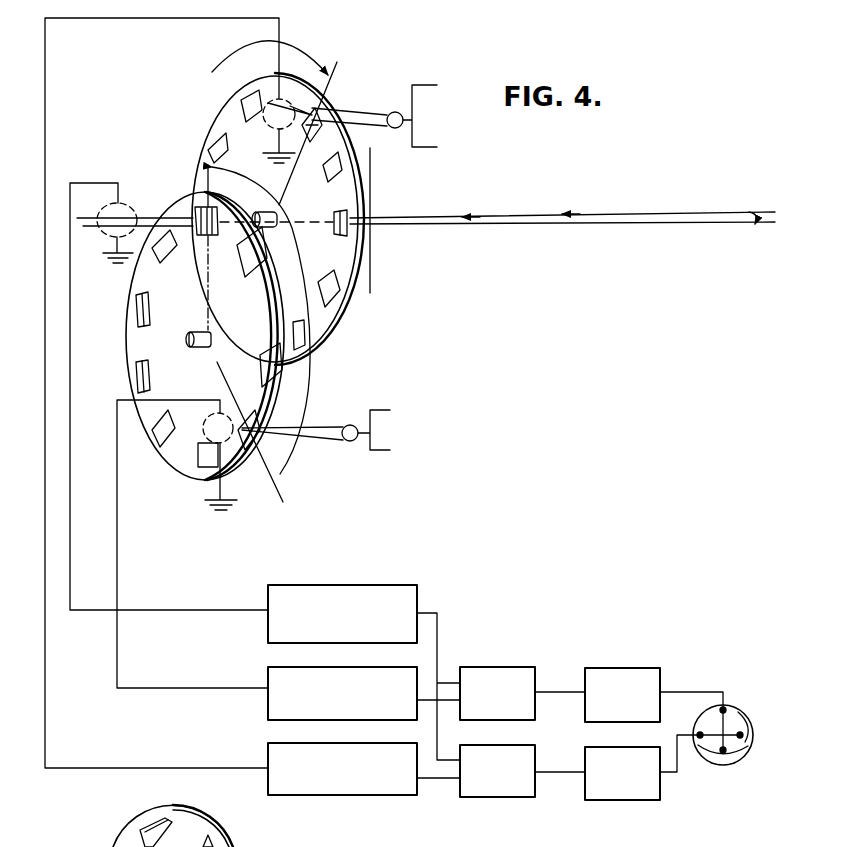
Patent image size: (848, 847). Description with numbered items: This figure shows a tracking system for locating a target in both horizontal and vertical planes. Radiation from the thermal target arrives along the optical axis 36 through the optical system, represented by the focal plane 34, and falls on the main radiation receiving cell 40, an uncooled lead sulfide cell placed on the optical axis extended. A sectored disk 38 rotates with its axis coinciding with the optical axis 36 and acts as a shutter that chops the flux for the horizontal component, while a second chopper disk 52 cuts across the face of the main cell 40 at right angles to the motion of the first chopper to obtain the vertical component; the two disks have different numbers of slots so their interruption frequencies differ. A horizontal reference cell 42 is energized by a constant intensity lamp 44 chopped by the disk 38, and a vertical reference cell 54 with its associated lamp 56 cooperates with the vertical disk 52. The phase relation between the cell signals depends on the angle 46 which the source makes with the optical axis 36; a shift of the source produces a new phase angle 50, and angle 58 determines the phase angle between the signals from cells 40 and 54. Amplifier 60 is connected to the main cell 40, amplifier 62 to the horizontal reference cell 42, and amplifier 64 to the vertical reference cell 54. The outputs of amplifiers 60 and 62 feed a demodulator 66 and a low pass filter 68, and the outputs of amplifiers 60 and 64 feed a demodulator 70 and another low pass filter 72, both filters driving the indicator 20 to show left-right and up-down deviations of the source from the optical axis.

The indicator 20 is at (730, 767).
The focal plane 34 is at (375, 265).
The optical axis 36 is at (612, 225).
The sectored disk 38 is at (128, 343).
The main radiation receiving cell 40 is at (133, 207).
The radiation sensitive cell 42 is at (203, 432).
The lamp 44 is at (350, 442).
The angle 46 is at (762, 222).
The phase angle 50 is at (301, 432).
The second chopper disk 52 is at (325, 320).
The reference cell 54 is at (318, 96).
The lamp 56 is at (393, 112).
The angle 58 is at (173, 206).
The amplifier 60 is at (287, 599).
The amplifier 62 is at (277, 680).
The amplifier 64 is at (277, 757).
The demodulator 66 is at (537, 677).
The low pass filter 68 is at (620, 678).
The demodulator 70 is at (478, 796).
The low pass filter 72 is at (635, 792).